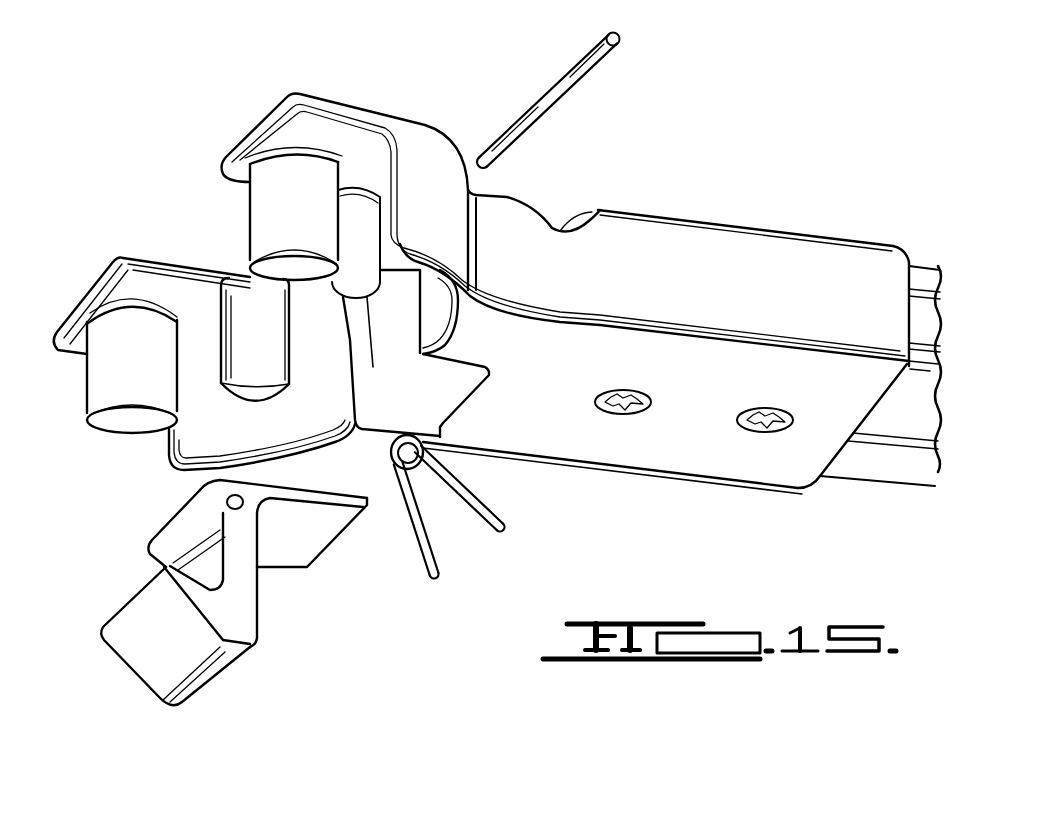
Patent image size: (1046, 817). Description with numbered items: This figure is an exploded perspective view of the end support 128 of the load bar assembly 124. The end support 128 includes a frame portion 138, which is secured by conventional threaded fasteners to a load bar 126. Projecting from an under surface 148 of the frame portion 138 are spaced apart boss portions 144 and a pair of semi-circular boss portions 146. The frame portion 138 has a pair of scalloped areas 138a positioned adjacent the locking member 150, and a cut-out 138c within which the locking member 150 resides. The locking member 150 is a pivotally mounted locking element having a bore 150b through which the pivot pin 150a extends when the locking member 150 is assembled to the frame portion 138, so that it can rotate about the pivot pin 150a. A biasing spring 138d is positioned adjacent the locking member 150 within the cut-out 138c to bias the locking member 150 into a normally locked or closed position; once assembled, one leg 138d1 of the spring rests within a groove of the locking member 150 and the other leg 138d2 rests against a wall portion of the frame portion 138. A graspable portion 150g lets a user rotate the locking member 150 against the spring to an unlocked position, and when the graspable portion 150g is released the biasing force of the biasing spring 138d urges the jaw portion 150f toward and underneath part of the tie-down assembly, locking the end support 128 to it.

The load bar assembly 124 is at (734, 217).
The load bar 126 is at (893, 467).
The end support 128 is at (733, 481).
The frame portion 138 is at (647, 430).
The scalloped areas 138a is at (553, 222).
The cut-out 138c is at (462, 379).
The biasing spring 138d is at (441, 557).
The leg 138d1 is at (412, 532).
The leg 138d2 is at (510, 518).
The boss portions 144 is at (270, 193).
The semi-circular boss portions 146 is at (260, 356).
The under surface 148 is at (197, 291).
The locking member 150 is at (213, 591).
The pivot pin 150a is at (555, 80).
The bore 150b is at (223, 502).
The jaw portion 150f is at (143, 650).
The graspable portion 150g is at (297, 557).